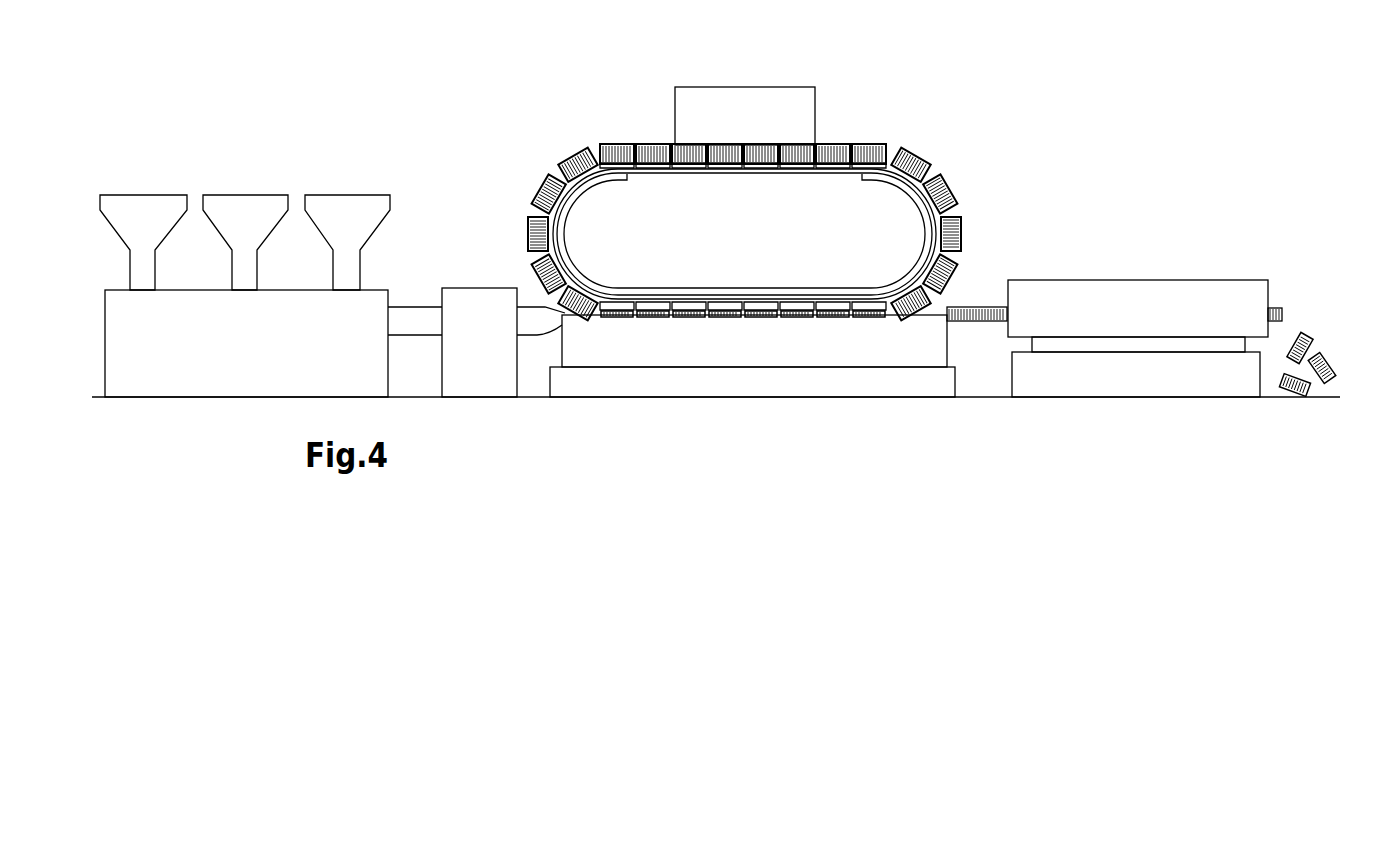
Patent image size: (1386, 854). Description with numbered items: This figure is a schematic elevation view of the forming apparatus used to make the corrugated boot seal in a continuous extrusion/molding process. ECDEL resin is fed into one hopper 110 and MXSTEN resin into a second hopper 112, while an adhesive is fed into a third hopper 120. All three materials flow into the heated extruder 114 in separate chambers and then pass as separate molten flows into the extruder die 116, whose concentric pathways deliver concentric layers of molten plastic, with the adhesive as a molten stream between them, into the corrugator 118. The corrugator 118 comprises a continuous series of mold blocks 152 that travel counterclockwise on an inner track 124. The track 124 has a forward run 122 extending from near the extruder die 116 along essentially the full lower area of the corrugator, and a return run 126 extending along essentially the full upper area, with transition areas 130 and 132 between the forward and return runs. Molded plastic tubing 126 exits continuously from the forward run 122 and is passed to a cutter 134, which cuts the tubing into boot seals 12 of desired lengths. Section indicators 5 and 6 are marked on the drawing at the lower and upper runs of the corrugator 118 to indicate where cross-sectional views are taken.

The hopper 110 is at (142, 203).
The second hopper 112 is at (248, 212).
The third hopper 120 is at (347, 208).
The heated extruder 114 is at (200, 372).
The extruder die 116 is at (535, 327).
The corrugator 118 is at (755, 170).
The forward run 122 is at (800, 315).
The inner track 124 is at (657, 180).
The return run 126 is at (690, 170).
The transition area 130 is at (986, 220).
The transition area 132 is at (518, 235).
The cutter 134 is at (1163, 297).
The mold blocks 152 is at (920, 157).
The boot seals 12 is at (1331, 325).
The section line 5- 5 is at (726, 280).
The section line 6- 6 is at (835, 130).